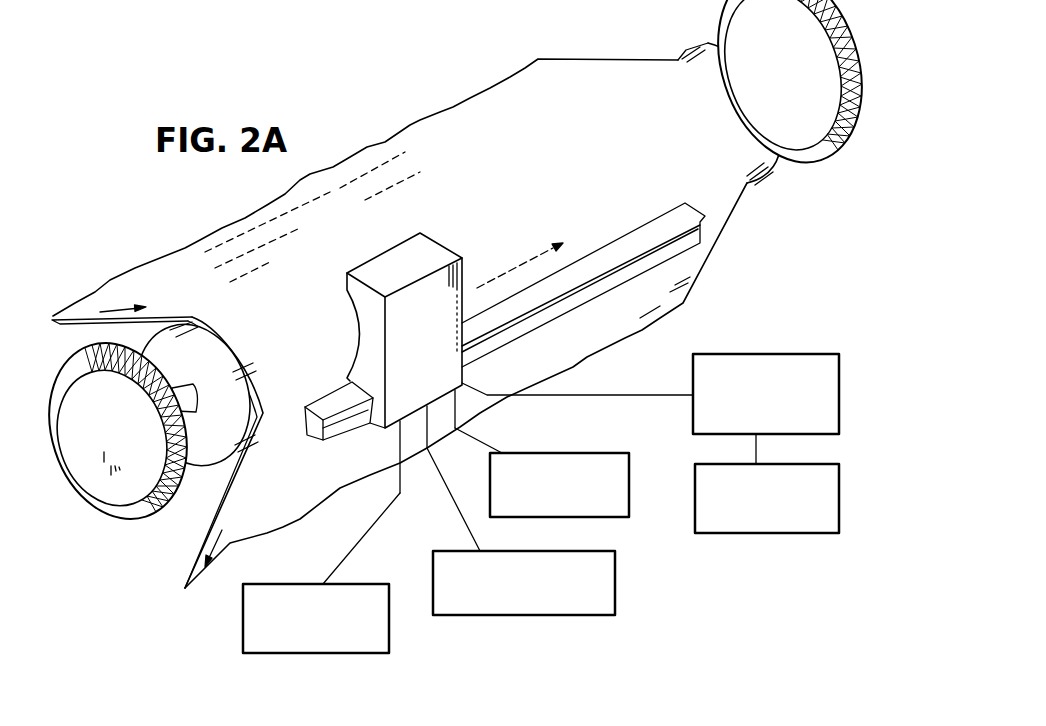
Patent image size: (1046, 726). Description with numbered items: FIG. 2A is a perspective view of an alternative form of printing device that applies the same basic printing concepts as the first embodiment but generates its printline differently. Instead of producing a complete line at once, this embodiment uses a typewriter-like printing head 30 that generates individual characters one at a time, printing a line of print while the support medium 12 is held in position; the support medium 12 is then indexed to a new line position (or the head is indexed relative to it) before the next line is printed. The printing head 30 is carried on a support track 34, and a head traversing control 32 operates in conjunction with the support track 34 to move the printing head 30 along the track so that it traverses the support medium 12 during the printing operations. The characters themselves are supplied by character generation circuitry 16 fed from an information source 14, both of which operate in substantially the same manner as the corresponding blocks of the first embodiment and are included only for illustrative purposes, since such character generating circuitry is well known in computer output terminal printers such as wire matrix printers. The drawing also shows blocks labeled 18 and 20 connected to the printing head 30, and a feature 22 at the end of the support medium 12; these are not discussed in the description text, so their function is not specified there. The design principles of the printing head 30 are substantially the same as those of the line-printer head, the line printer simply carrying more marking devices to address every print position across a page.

The support medium 12 is at (594, 64).
The information source 14 is at (830, 530).
The character generation circuitry 16 is at (830, 430).
The printing solution #1 supply 18 is at (615, 513).
The printing solution #2 supply 20 is at (243, 628).
The drum end flange 22 is at (222, 442).
The printing head 30 is at (425, 250).
The head traversing control 32 is at (460, 612).
The support track 34 is at (705, 217).